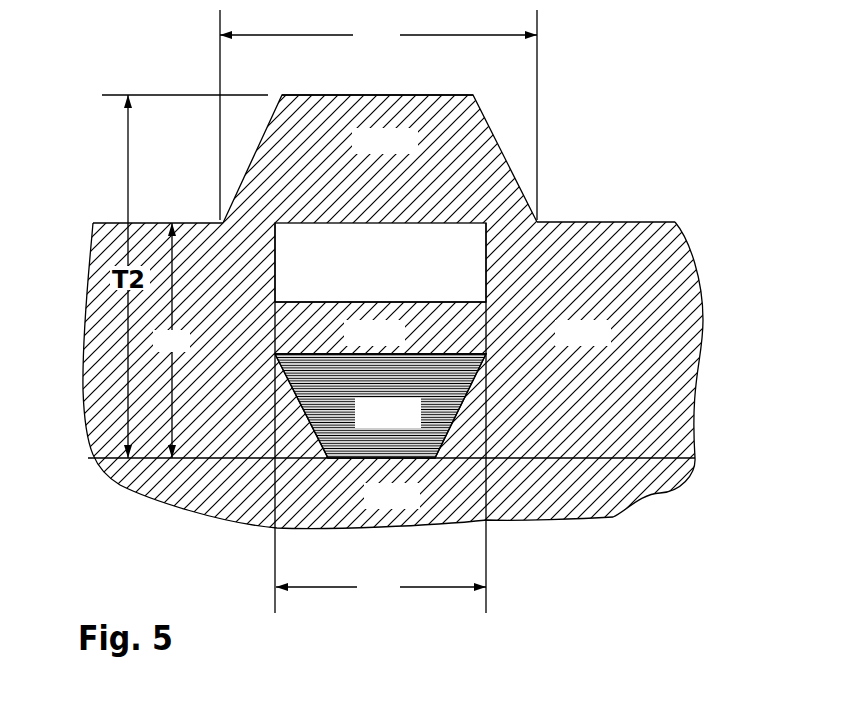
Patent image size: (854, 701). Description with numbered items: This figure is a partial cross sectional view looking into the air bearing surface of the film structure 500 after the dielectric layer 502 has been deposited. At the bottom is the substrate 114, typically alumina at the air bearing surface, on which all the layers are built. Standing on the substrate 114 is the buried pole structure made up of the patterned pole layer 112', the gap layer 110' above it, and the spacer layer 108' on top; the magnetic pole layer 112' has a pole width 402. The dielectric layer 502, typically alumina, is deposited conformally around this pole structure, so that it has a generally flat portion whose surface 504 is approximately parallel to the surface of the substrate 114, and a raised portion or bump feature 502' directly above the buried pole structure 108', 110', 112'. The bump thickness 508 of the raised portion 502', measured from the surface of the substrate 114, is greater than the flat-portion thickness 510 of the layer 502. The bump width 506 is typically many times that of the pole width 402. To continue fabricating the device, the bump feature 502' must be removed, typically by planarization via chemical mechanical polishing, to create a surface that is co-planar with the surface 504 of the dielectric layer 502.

The film structure 500 is at (553, 109).
The dielectric layer 502 is at (393, 312).
The bump feature 502' is at (380, 159).
The surface 504 is at (113, 223).
The width of the bump feature 506 is at (360, 47).
The thickness T2 508 is at (112, 287).
The thickness T1 510 is at (188, 355).
The spacer layer 108' is at (380, 262).
The gap layer 110' is at (380, 328).
The pole layer 112' is at (380, 406).
The substrate 114 is at (417, 507).
The pole width 402 is at (398, 612).